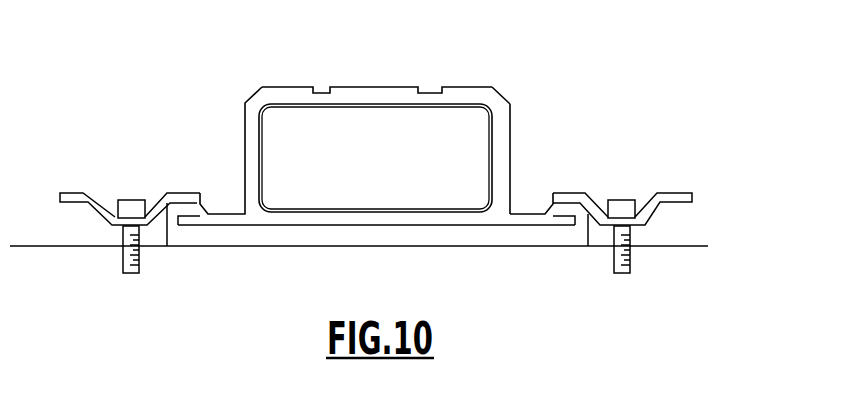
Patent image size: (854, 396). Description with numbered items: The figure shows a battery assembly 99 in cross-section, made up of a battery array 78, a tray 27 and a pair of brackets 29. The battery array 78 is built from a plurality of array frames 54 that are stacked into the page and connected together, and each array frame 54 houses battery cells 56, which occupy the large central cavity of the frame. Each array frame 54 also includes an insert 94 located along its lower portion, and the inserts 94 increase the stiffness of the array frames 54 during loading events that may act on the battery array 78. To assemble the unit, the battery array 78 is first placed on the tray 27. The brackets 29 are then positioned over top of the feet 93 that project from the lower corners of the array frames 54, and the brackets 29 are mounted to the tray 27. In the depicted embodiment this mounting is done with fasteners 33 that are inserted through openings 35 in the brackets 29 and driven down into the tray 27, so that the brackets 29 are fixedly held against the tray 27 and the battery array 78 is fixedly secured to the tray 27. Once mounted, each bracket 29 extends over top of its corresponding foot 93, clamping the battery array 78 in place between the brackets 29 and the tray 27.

The battery assembly 99 is at (382, 62).
The battery array 78 is at (489, 72).
The array frame 54 is at (520, 98).
The battery cells 56 is at (393, 158).
The bracket 29 is at (82, 194).
The fastener 33 is at (135, 200).
The opening 35 is at (117, 223).
The feet 93 is at (190, 216).
The insert 94 is at (481, 226).
The tray 27 is at (235, 247).